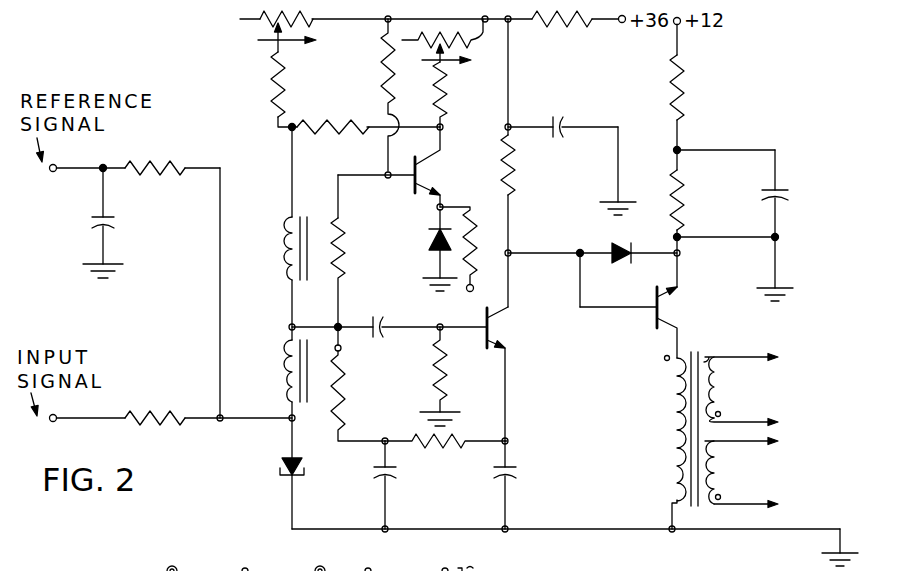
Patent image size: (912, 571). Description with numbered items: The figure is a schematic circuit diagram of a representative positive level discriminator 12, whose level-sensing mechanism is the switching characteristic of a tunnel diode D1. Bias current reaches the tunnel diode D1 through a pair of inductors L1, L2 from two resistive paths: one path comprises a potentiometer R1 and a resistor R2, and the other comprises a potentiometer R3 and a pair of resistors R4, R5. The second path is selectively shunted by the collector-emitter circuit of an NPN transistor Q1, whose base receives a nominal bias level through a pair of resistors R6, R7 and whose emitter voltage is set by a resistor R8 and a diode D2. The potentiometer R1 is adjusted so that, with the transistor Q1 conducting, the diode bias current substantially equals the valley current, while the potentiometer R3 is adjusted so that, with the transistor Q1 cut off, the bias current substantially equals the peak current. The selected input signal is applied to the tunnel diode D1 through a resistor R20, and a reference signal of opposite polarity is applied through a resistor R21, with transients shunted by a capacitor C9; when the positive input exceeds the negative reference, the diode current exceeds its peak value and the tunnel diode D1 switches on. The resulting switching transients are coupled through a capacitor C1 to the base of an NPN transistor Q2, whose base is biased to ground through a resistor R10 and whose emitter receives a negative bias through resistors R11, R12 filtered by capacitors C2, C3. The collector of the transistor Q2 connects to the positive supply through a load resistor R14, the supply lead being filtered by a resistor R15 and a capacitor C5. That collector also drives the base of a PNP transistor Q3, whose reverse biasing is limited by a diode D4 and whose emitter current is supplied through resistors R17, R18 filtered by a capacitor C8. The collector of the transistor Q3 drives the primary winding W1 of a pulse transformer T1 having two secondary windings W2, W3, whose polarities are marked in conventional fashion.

The potentiometer R1 is at (262, 30).
The resistor R2 is at (274, 94).
The potentiometer R3 is at (473, 45).
The resistor R4 is at (443, 115).
The resistor R5 is at (323, 121).
The resistor R6 is at (382, 51).
The resistor R7 is at (342, 240).
The resistor R8 is at (477, 231).
The resistor R10 is at (441, 363).
The resistor R11 is at (348, 392).
The resistor R12 is at (441, 448).
The load resistor R14 is at (514, 164).
The resistor R15 is at (550, 31).
The resistor R17 is at (687, 89).
The resistor R18 is at (684, 199).
The resistor R20 is at (152, 418).
The resistor R21 is at (151, 167).
The capacitor C1 is at (379, 340).
The capacitor C2 is at (380, 478).
The capacitor C3 is at (512, 472).
The capacitor C5 is at (566, 128).
The capacitor C8 is at (782, 188).
The capacitor C9 is at (111, 227).
The inductor L1 is at (284, 259).
The inductor L2 is at (284, 354).
The tunnel diode D1 is at (280, 464).
The diode D2 is at (430, 235).
The diode D4 is at (624, 260).
The NPN transistor Q1 is at (430, 163).
The NPN transistor Q2 is at (498, 317).
The PNP transistor Q3 is at (659, 334).
The pulse transformer T1 is at (692, 361).
The primary winding W1 is at (675, 469).
The secondary winding W2 is at (715, 393).
The secondary winding W3 is at (718, 476).
The positive discriminator 12 is at (353, 342).